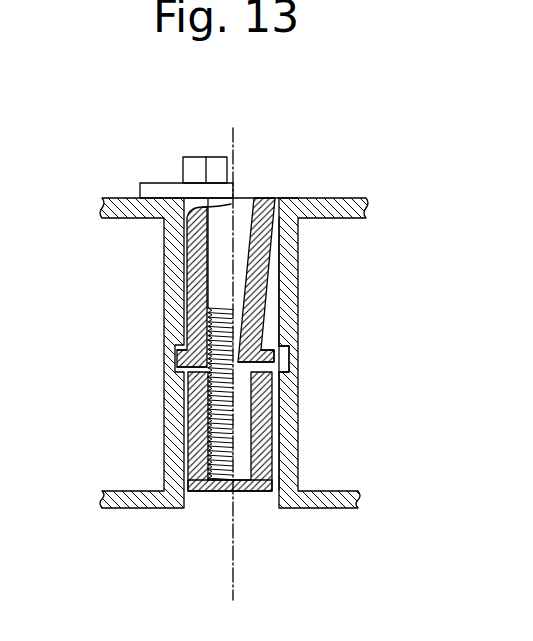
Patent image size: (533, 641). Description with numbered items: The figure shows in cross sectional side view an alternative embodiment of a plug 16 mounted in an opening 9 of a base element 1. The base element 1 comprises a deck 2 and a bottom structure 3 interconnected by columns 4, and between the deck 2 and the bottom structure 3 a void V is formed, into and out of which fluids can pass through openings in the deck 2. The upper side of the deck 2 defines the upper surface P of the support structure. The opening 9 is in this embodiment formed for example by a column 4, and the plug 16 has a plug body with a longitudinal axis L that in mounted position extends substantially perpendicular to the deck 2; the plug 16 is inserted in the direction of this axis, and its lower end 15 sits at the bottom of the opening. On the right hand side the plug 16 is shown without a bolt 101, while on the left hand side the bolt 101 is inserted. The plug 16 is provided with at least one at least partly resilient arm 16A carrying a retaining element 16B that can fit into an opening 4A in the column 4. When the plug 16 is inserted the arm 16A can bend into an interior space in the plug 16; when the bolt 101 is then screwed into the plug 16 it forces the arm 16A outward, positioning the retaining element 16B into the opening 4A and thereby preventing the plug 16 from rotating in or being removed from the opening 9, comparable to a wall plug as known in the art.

The base element 1 is at (103, 538).
The deck 2 is at (348, 198).
The bottom structure 3 is at (337, 512).
The column 4 is at (289, 272).
The opening in the column 4A is at (290, 356).
The opening 9 is at (274, 192).
The upper surface P is at (330, 191).
The longitudinal axis L is at (239, 132).
The lower end of the plug 15 is at (204, 493).
The plug 16 is at (266, 414).
The resilient arm 16A is at (197, 280).
The retaining element 16B is at (187, 360).
The bolt 101 is at (192, 170).
The void V is at (111, 361).